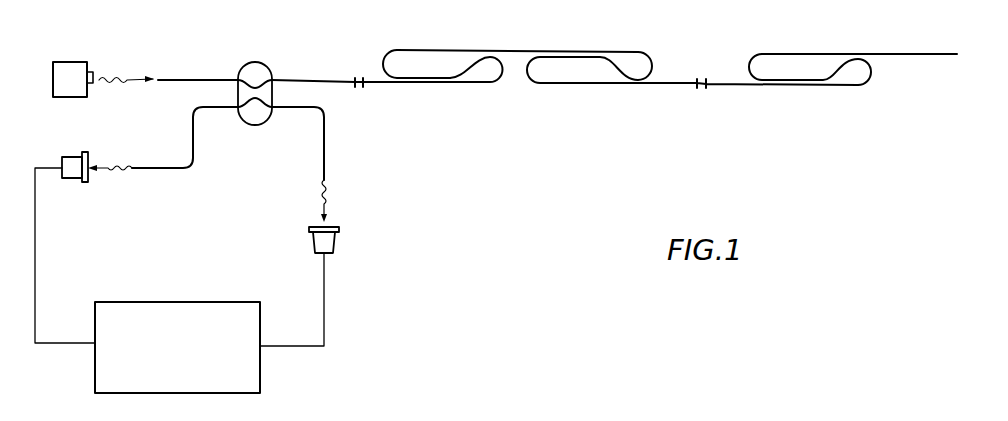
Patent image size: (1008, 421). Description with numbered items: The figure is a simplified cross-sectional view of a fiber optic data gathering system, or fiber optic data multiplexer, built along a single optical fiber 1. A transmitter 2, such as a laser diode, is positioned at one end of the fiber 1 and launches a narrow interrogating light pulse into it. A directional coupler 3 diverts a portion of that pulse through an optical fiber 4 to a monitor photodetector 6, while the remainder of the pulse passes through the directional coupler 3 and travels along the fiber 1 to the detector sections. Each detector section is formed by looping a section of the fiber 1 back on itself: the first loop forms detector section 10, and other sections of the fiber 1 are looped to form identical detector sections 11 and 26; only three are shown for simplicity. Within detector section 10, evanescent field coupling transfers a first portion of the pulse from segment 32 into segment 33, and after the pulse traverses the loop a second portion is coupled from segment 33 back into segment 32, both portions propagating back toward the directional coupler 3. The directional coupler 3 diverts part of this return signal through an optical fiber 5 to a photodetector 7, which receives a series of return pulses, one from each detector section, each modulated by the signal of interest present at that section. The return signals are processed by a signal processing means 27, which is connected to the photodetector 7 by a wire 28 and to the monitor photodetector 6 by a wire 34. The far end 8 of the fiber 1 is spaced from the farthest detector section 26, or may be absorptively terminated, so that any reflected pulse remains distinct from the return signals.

The optical fiber 1 is at (323, 77).
The transmitter 2 is at (67, 62).
The directional coupler 3 is at (262, 60).
The optical fiber 4 is at (321, 138).
The optical fiber 5 is at (199, 152).
The monitor photodetector 6 is at (339, 240).
The photodetector 7 is at (72, 182).
The end of fiber 8 is at (955, 57).
The detector section 10 is at (493, 84).
The detector section 11 is at (632, 52).
The detector section 26 is at (857, 87).
The signal processing means 27 is at (177, 300).
The wire 28 is at (50, 345).
The segment of fiber 32 is at (410, 79).
The segment of fiber 33 is at (410, 50).
The wire 34 is at (324, 326).